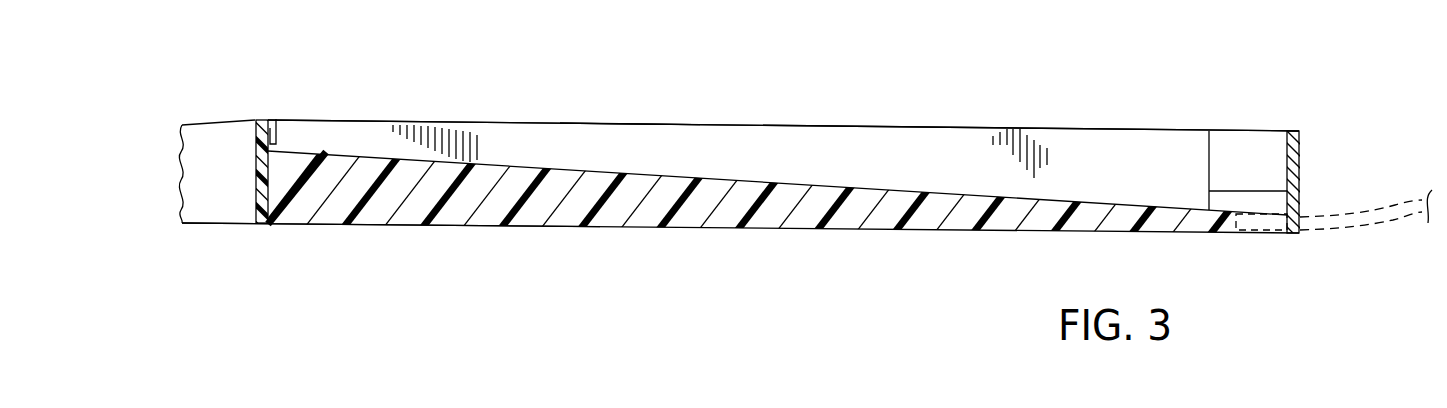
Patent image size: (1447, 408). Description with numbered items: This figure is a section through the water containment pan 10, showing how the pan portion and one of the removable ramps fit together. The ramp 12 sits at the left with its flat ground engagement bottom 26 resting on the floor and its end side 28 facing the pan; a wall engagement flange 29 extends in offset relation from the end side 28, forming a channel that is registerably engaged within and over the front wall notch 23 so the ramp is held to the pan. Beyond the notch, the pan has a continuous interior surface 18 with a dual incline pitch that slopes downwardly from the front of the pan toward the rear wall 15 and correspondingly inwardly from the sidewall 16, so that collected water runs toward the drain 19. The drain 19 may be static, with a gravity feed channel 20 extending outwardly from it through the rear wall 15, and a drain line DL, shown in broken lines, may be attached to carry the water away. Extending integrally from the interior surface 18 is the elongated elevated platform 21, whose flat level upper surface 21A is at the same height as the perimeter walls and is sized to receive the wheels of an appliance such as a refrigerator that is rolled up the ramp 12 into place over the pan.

The water containment pan 10 is at (1213, 70).
The ramp 12 is at (179, 173).
The rear wall 15 is at (1297, 157).
The sidewall 16 is at (1252, 138).
The interior surface 18 is at (683, 164).
The drain 19 is at (1263, 210).
The gravity feed channel 20 is at (1336, 230).
The elevated platform 21 is at (880, 137).
The upper surface 21A is at (638, 122).
The front wall notch 23 is at (263, 120).
The ground engagement bottom 26 is at (222, 223).
The end side 28 is at (270, 188).
The wall engagement flange 29 is at (278, 126).
The drain line DL is at (1352, 230).